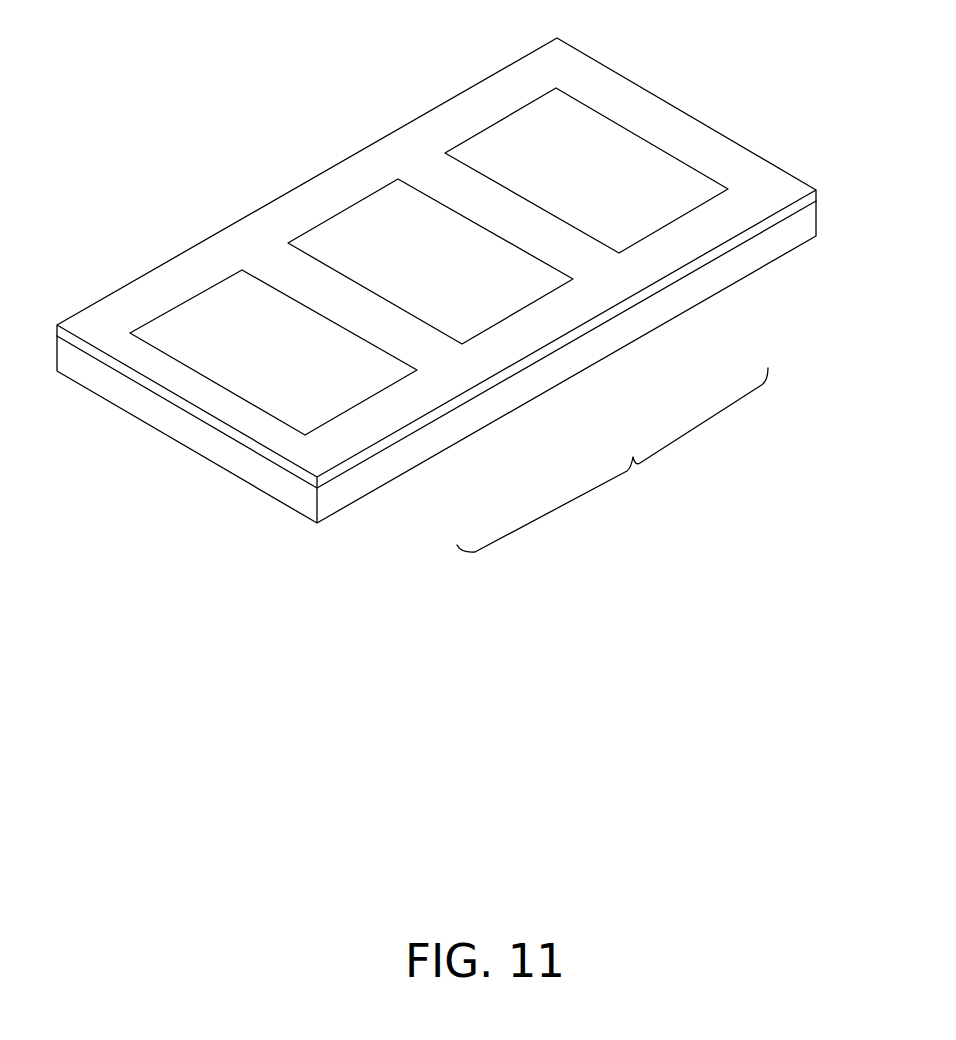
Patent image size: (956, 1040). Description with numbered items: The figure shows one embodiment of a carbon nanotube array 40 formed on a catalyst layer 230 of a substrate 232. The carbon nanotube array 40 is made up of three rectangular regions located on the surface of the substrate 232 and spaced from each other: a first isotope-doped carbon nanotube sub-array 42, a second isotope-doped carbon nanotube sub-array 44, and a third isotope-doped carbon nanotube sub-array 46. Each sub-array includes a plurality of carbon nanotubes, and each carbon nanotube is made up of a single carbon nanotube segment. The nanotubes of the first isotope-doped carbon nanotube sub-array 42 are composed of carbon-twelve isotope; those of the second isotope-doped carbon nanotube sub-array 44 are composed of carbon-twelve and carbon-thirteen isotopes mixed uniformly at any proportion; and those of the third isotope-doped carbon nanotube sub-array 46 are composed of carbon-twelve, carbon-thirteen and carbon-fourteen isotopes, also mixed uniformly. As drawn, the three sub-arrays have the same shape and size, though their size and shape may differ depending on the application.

The carbon nanotube array 40 is at (612, 460).
The first isotope-doped carbon nanotube sub-array 42 is at (610, 206).
The second isotope-doped carbon nanotube sub-array 44 is at (470, 277).
The third isotope-doped carbon nanotube sub-array 46 is at (320, 378).
The catalyst layer 230 is at (230, 435).
The substrate 232 is at (273, 483).